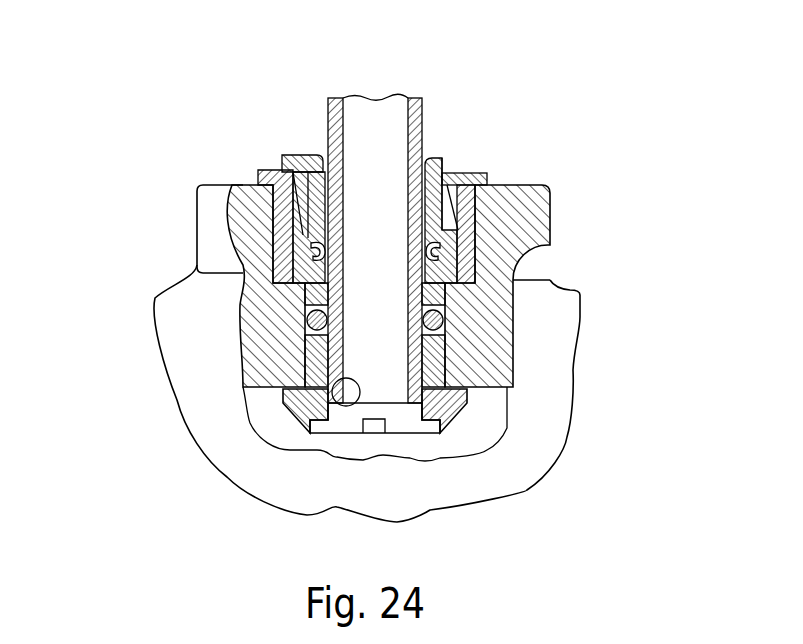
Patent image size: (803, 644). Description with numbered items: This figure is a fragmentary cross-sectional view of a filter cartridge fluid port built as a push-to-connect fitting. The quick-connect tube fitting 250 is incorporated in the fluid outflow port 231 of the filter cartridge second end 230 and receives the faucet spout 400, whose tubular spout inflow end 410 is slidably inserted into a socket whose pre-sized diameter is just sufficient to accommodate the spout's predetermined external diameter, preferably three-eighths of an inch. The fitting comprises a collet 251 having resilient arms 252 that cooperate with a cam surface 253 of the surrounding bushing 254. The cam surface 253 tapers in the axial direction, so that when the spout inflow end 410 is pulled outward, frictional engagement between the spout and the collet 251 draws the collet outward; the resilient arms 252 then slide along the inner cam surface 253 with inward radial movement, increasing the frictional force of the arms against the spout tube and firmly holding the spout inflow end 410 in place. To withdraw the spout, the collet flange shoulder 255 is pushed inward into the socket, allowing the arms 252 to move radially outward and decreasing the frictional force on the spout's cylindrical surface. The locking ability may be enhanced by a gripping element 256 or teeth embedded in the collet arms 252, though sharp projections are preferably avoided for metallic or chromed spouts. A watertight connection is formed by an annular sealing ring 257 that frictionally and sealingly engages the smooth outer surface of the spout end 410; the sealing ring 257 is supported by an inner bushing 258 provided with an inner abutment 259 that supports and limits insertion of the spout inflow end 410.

The filter cartridge second end 230 is at (548, 368).
The fluid outflow port 231 is at (217, 228).
The water delivery spout 400 is at (333, 99).
The quick-connect tube fitting 250 is at (347, 278).
The collet 251 is at (313, 158).
The resilient arms 252 is at (513, 313).
The cam surface 253 is at (549, 195).
The bushing 254 is at (287, 190).
The collet flange shoulder 255 is at (453, 158).
The gripping element 256 is at (307, 313).
The annular sealing ring 257 is at (305, 305).
The inner bushing 258 is at (437, 392).
The inner abutment 259 is at (403, 413).
The spout inflow end 410 is at (352, 400).